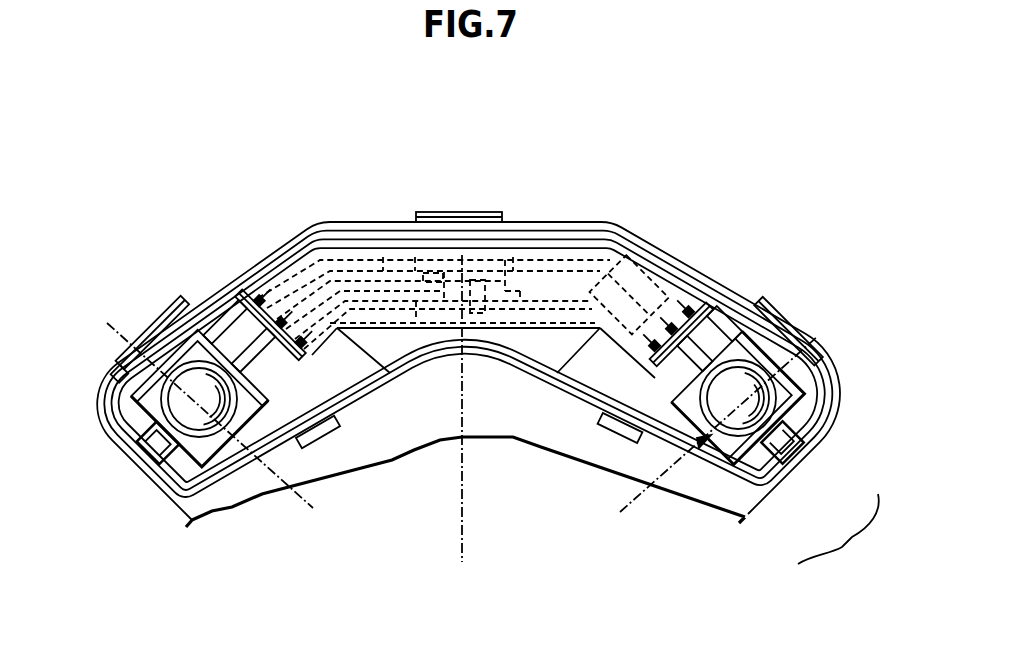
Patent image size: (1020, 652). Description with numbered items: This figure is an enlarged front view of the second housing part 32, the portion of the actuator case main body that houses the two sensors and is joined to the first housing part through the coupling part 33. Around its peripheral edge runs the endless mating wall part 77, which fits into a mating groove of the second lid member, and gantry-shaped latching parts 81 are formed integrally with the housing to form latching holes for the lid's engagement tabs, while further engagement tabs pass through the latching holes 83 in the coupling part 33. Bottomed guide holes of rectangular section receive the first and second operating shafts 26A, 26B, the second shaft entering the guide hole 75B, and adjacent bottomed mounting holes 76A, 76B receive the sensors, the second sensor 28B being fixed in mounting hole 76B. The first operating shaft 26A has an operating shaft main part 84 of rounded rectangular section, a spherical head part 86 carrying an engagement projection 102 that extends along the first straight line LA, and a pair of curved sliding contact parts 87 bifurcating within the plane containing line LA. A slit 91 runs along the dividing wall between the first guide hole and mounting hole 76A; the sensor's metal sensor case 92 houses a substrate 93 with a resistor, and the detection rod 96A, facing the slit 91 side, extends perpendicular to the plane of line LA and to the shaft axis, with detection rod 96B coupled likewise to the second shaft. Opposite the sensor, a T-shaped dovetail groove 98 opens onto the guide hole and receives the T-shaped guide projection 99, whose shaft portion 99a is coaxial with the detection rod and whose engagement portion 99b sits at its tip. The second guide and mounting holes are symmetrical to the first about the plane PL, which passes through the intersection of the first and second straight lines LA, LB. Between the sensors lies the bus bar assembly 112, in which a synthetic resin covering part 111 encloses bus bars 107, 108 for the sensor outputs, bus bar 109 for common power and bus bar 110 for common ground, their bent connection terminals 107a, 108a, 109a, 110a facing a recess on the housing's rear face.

The first operating shaft 26A is at (668, 470).
The second operating shaft 26B is at (233, 450).
The second sensor 28B is at (219, 318).
The second housing part 32 is at (580, 221).
The coupling part 33 is at (510, 433).
The guide hole 75B is at (190, 333).
The mounting hole 76A is at (704, 318).
The mounting hole 76B is at (303, 440).
The mating wall part 77 is at (314, 233).
The latching parts 81 is at (443, 212).
The latching holes 83 is at (336, 426).
The operating shaft main part 84 is at (775, 412).
The spherical head part 86 is at (722, 425).
The curved sliding contact parts 87 is at (800, 386).
The slit 91 is at (592, 401).
The sensor case 92 is at (676, 365).
The substrate 93 is at (568, 364).
The detection rod 96A is at (740, 334).
The detection rod 96B is at (310, 367).
The dovetail groove 98 is at (806, 447).
The guide projection 99 is at (841, 529).
The shaft portion 99a is at (777, 490).
The engagement portion 99b is at (785, 450).
The engagement projection 102 is at (800, 353).
The bus bar 107 is at (523, 297).
The connection terminal 107a is at (495, 257).
The bus bar 108 is at (416, 318).
The connection terminal 108a is at (481, 335).
The bus bar 109 is at (513, 257).
The connection terminal 109a is at (415, 257).
The bus bar 110 is at (383, 257).
The connection terminal 110a is at (440, 257).
The covering part 111 is at (602, 258).
The bus bar assembly 112 is at (549, 240).
The first straight line LA is at (820, 332).
The second straight line LB is at (199, 403).
The plane PL is at (453, 518).